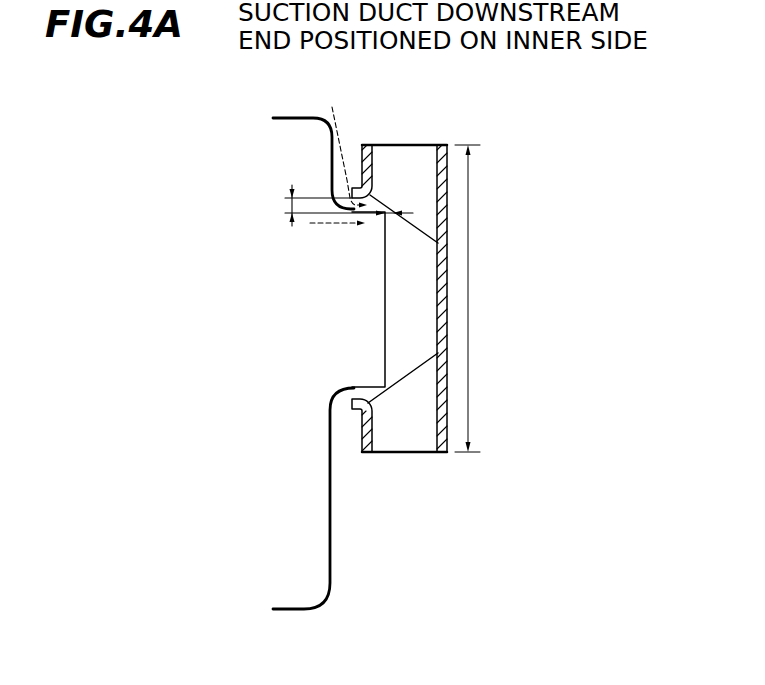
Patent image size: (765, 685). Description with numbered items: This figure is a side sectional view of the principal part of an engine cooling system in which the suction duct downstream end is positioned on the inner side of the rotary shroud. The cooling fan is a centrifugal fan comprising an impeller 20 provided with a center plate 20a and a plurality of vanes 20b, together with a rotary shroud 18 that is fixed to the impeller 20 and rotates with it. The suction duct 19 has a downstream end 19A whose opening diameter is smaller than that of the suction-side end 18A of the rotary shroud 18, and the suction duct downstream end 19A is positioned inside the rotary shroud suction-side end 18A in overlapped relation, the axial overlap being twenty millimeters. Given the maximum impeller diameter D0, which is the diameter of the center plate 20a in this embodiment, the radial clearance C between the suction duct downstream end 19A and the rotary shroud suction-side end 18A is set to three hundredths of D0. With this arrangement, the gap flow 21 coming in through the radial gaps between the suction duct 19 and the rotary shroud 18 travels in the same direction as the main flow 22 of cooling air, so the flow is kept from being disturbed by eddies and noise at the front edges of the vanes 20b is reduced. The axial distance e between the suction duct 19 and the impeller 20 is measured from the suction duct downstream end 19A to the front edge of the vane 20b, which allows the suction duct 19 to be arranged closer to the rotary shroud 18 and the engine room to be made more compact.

The rotary shroud 18 is at (358, 155).
The suction-side end of the rotary shroud 18A is at (340, 398).
The suction duct 19 is at (331, 547).
The suction duct downstream end 19A is at (385, 342).
The impeller 20 is at (553, 220).
The center plate 20a is at (437, 263).
The vanes 20b is at (418, 196).
The gap flow 21 is at (341, 145).
The main flow 22 is at (330, 226).
The radial clearance C is at (347, 205).
The distance between suction duct and impeller e is at (392, 211).
The maximum diameter of the impeller D0 is at (468, 298).